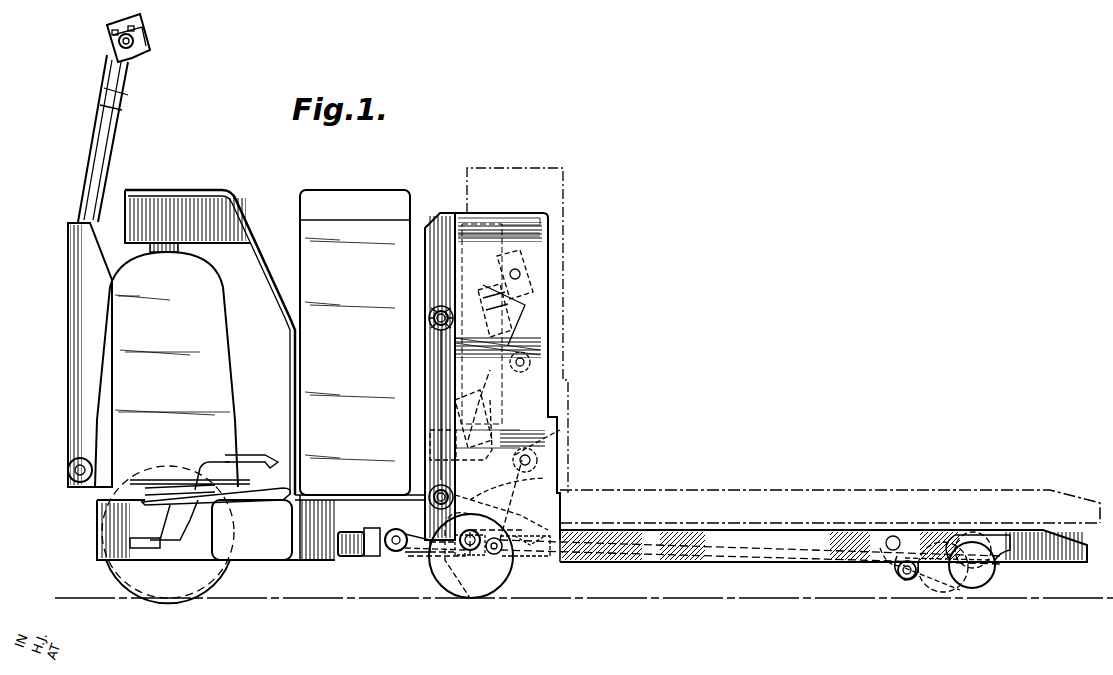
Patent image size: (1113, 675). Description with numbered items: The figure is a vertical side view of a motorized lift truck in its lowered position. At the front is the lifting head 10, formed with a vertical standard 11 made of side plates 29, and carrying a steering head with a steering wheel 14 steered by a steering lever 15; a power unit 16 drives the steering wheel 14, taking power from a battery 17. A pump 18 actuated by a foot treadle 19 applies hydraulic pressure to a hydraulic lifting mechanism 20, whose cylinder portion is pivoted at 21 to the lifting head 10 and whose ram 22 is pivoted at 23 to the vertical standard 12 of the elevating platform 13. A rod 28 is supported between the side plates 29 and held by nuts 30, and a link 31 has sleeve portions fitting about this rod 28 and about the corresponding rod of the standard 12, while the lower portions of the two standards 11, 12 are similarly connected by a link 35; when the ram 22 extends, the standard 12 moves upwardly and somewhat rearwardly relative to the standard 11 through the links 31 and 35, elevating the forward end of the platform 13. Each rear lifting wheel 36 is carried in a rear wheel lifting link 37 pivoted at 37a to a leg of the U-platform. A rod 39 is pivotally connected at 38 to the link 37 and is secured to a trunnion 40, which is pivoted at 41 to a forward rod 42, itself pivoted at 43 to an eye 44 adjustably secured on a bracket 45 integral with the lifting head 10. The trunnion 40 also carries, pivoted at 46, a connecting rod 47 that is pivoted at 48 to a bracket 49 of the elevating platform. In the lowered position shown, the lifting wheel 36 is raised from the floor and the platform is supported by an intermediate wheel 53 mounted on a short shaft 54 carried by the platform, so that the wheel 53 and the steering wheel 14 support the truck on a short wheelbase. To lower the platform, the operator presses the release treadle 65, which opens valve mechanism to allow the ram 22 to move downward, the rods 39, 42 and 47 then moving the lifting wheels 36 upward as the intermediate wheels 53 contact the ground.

The lifting head 10 is at (475, 447).
The vertical standard 11 is at (437, 216).
The vertical standard 12 is at (545, 168).
The elevating platform 13 is at (660, 530).
The steering wheel 14 is at (110, 572).
The steering lever 15 is at (115, 131).
The power unit 16 is at (177, 379).
The battery 17 is at (367, 361).
The pump 18 is at (262, 531).
The foot treadle 19 is at (160, 497).
The hydraulic lifting mechanism 20 is at (498, 366).
The pivot 21 is at (425, 448).
The ram 22 is at (522, 292).
The pivot 23 is at (520, 276).
The rod 28 is at (434, 320).
The side plates 29 is at (432, 274).
The nuts 30 is at (436, 311).
The link 31 is at (526, 345).
The link 35 is at (535, 478).
The rear lifting wheel 36 is at (968, 588).
The rear wheel lifting link 37 is at (938, 570).
The pivot 37a is at (893, 536).
The pivot 38 is at (902, 580).
The rod 39 is at (633, 558).
The trunnion 40 is at (525, 560).
The pivot 41 is at (450, 555).
The forward rod 42 is at (425, 553).
The pivot 43 is at (397, 552).
The eye 44 is at (387, 552).
The bracket 45 is at (360, 558).
The pivot 46 is at (493, 556).
The connecting rod 47 is at (540, 498).
The pivot 48 is at (545, 443).
The bracket 49 is at (540, 425).
The intermediate wheel 53 is at (455, 585).
The short shaft 54 is at (467, 562).
The release treadle 65 is at (130, 540).